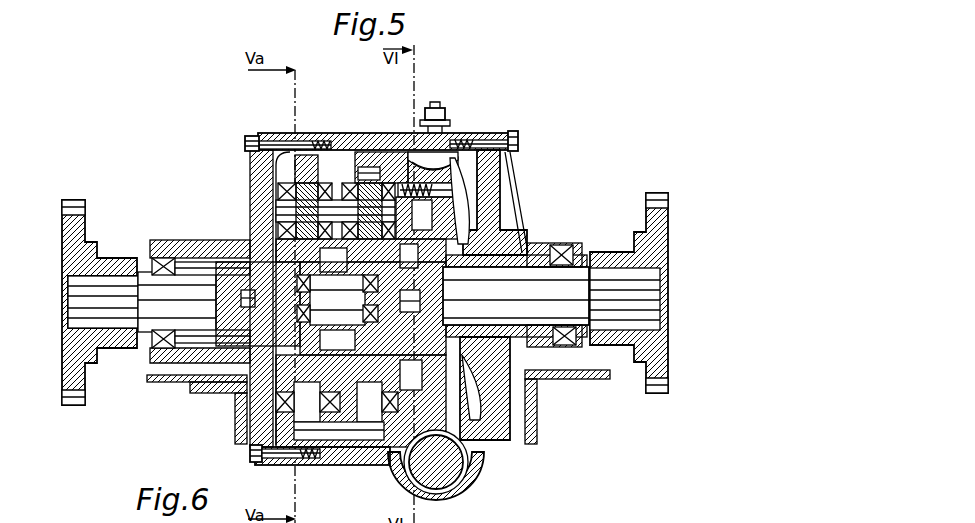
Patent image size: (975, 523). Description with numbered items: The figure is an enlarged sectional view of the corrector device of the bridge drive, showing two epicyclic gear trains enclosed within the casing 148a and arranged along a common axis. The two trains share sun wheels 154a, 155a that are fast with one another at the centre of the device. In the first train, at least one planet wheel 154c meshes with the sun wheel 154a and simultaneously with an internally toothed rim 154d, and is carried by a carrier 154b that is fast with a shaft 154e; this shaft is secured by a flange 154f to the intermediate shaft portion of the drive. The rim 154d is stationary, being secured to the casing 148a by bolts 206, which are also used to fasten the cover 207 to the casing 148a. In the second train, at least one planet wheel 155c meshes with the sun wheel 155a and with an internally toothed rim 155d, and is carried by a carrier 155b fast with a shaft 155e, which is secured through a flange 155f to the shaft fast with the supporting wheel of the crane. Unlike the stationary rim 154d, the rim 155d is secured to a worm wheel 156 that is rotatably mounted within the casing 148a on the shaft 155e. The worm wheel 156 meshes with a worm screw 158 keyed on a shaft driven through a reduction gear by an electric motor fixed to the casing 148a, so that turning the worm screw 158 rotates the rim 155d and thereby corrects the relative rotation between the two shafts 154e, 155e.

The casing 148a is at (331, 131).
The sun wheel 154a is at (253, 243).
The carrier 154b is at (287, 370).
The planet wheel 154c is at (277, 183).
The internally toothed rim 154d is at (293, 143).
The shaft 154e is at (152, 283).
The flange 154f is at (62, 238).
The sun wheel 155a is at (443, 221).
The carrier 155b is at (352, 452).
The planet wheel 155c is at (392, 155).
The internally toothed rim 155d is at (372, 153).
The shaft 155e is at (538, 277).
The flange 155f is at (662, 229).
The worm wheel 156 is at (455, 155).
The worm screw 158 is at (455, 470).
The bolts 206 is at (267, 143).
The cover 207 is at (192, 242).